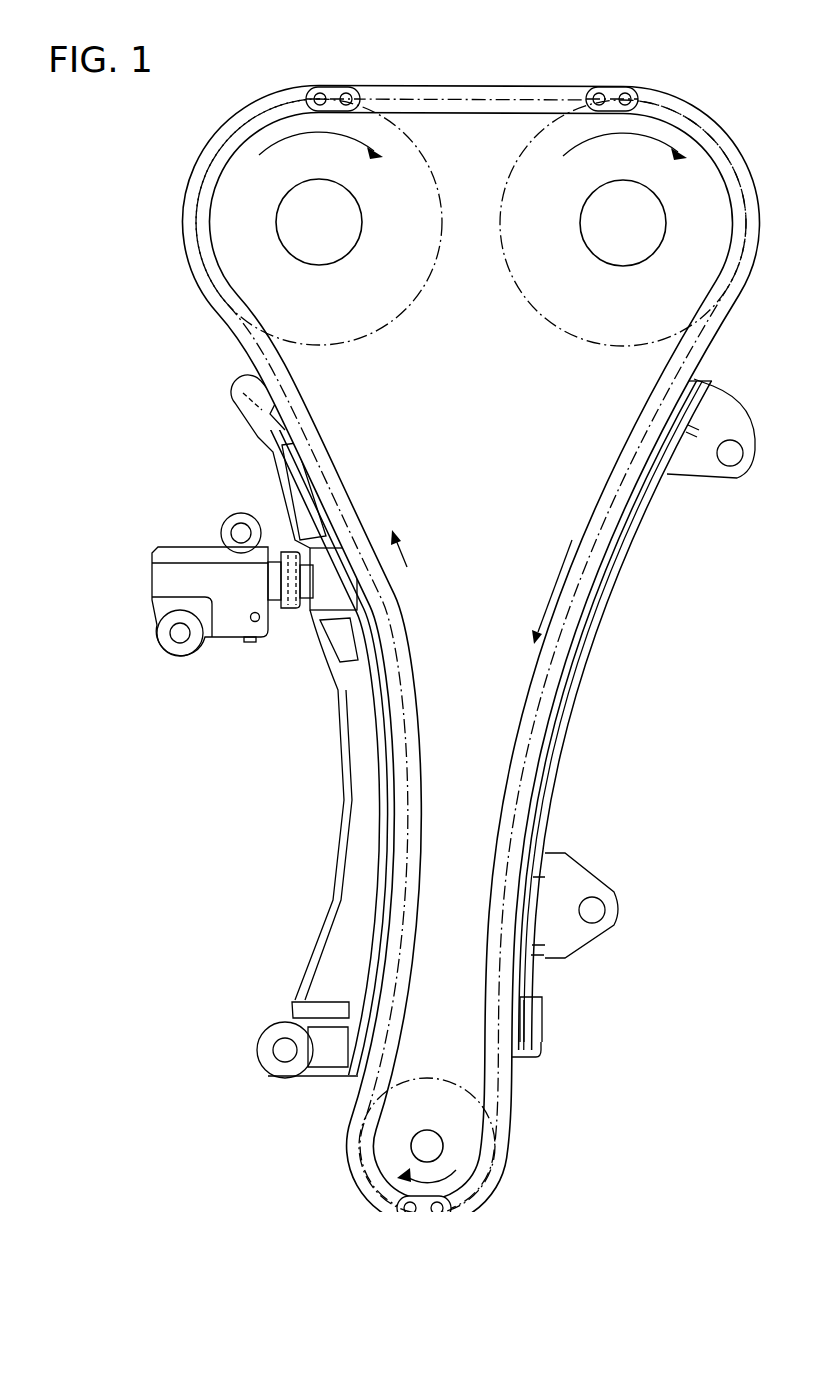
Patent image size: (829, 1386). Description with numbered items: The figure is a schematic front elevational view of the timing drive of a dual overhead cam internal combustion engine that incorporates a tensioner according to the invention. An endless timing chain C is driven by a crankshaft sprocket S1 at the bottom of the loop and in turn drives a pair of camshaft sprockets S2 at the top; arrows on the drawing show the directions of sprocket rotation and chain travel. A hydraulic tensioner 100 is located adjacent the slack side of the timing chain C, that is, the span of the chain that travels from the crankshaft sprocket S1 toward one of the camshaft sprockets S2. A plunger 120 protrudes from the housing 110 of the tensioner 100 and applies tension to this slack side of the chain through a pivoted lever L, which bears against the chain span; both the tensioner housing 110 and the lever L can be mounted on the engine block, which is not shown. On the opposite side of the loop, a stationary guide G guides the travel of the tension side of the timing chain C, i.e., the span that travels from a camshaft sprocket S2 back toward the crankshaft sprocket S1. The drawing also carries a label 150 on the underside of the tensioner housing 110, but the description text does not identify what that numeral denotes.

The timing chain C is at (496, 86).
The crankshaft sprocket S1 is at (438, 1090).
The camshaft sprocket S2 is at (360, 328).
The lever L is at (345, 802).
The guide G is at (575, 700).
The hydraulic tensioner 100 is at (200, 581).
The housing 110 is at (147, 590).
The plunger 120 is at (281, 608).
The relief valve 150 is at (247, 643).